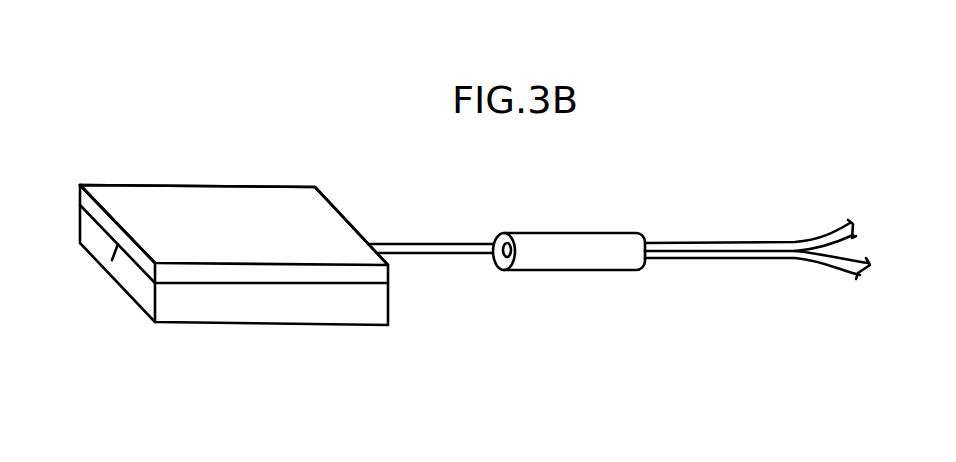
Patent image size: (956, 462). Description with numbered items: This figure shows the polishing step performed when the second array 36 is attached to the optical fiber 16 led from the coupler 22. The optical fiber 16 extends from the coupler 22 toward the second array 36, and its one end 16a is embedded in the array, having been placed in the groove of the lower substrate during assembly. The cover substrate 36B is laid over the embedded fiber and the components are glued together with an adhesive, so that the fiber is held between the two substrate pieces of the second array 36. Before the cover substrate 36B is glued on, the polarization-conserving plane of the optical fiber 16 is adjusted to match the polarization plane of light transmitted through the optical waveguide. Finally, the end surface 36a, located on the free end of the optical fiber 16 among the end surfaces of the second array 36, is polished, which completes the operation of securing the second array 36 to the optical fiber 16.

The second array 36 is at (326, 326).
The end surface 36a is at (142, 303).
The cover substrate 36B is at (255, 205).
The one end of the optical fiber 16a is at (118, 244).
The optical fiber 16 is at (457, 255).
The coupler 22 is at (571, 240).